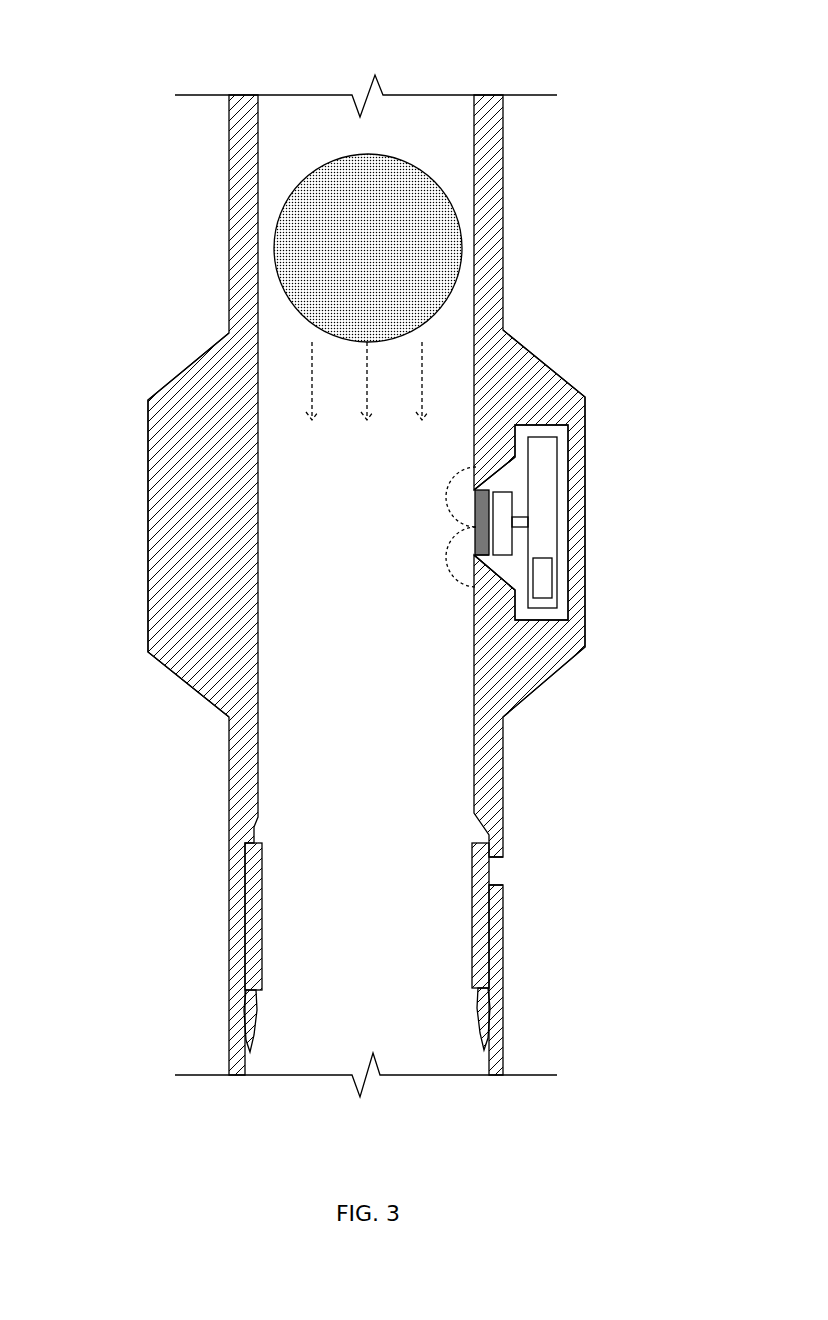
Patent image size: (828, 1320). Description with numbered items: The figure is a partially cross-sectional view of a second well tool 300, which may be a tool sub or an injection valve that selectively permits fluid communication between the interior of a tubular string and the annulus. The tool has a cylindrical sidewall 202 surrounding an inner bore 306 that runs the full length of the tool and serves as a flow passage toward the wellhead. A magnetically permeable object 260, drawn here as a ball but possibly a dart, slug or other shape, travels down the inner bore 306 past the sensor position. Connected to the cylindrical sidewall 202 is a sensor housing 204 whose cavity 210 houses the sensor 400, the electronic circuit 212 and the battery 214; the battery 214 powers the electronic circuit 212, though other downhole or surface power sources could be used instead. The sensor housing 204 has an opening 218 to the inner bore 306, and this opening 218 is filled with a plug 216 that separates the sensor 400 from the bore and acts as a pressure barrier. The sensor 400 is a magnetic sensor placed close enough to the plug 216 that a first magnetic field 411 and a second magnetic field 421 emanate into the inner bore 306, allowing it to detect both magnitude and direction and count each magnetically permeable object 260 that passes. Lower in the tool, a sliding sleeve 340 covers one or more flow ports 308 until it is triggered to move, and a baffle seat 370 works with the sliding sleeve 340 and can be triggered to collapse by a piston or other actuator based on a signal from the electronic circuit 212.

The second well tool 300 is at (135, 44).
The cylindrical sidewall 202 is at (505, 214).
The sensor housing 204 is at (542, 362).
The inner bore 306 is at (277, 150).
The magnetically permeable object 260 is at (275, 268).
The cavity 210 is at (572, 610).
The electronic circuit 212 is at (545, 470).
The battery 214 is at (553, 593).
The sensor 400 is at (505, 518).
The plug 216 is at (480, 524).
The opening 218 is at (474, 555).
The first magnetic field 411 is at (472, 474).
The second magnetic field 421 is at (458, 575).
The flow port 308 is at (508, 872).
The sliding sleeve 340 is at (502, 957).
The baffle seat 370 is at (507, 1010).